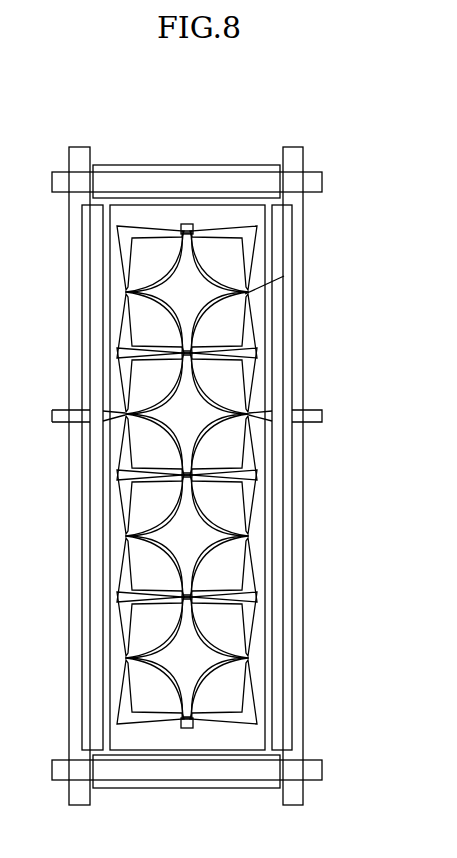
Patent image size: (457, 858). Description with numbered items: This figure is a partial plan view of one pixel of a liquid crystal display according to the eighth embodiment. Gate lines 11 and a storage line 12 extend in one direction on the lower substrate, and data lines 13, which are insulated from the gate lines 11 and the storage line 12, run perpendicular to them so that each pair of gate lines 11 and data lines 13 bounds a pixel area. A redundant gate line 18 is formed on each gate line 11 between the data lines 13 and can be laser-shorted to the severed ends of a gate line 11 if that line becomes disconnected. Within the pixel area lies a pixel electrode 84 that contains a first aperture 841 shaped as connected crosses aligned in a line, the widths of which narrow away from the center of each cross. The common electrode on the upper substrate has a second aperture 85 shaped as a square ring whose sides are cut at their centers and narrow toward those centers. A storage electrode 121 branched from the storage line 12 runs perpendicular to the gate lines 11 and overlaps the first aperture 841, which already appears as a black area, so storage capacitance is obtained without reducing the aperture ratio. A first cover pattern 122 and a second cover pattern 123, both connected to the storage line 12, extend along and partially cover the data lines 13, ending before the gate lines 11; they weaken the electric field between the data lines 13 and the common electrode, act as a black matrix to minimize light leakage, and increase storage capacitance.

The gate lines 11 is at (242, 172).
The storage line 12 is at (322, 417).
The storage electrode 121 is at (270, 589).
The first cover pattern 122 is at (90, 610).
The second cover pattern 123 is at (283, 498).
The data lines 13 is at (69, 287).
The redundant gate line 18 is at (148, 165).
The pixel electrode 84 is at (266, 212).
The first aperture 841 is at (284, 285).
The second aperture 85 is at (247, 360).